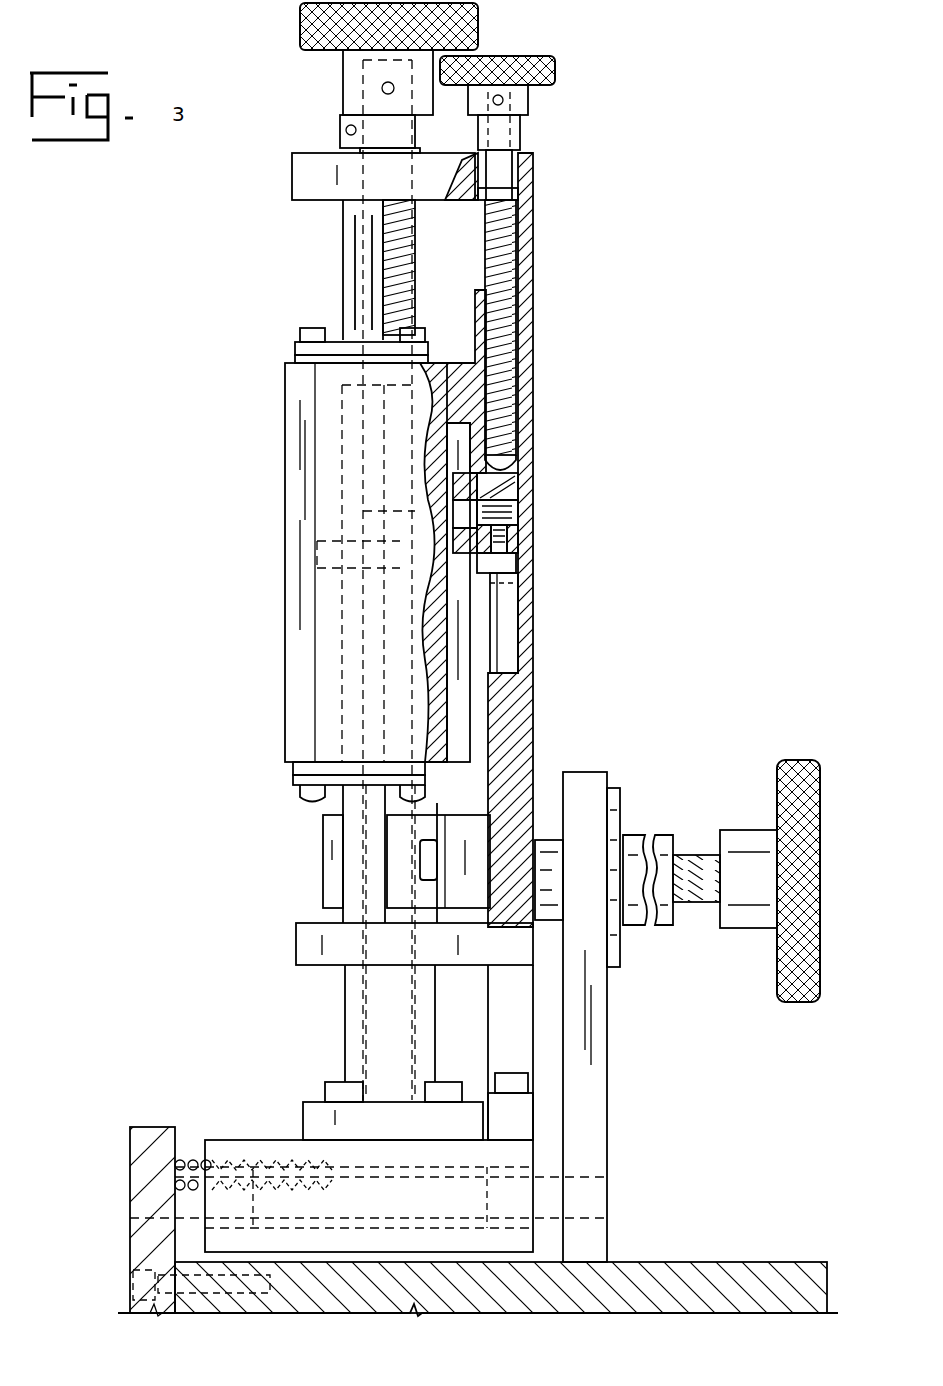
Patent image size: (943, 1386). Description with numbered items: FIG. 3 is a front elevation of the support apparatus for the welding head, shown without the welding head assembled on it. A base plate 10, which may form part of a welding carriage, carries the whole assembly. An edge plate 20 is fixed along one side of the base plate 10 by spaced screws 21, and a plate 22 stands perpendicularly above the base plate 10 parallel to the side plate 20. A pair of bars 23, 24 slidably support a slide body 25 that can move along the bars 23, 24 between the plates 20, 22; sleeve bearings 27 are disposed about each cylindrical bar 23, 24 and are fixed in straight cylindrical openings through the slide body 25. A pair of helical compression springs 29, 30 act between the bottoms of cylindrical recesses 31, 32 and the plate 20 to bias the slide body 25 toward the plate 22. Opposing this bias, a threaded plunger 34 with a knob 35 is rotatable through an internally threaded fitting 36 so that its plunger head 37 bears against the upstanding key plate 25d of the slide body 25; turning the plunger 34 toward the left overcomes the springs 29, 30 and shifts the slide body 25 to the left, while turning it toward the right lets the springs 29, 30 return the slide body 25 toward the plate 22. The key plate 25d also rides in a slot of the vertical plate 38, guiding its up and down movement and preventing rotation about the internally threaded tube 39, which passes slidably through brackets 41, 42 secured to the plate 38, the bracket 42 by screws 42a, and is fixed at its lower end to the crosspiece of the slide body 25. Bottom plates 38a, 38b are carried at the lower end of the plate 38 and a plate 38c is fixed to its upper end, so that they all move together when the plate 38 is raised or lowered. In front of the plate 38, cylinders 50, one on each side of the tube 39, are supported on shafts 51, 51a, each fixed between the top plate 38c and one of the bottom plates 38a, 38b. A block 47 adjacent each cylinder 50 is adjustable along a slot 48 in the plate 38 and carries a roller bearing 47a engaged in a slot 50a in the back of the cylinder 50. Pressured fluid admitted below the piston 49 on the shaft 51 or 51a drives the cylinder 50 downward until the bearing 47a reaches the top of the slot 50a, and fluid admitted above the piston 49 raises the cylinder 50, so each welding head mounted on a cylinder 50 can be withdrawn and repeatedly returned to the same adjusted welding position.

The base plate 10 is at (702, 1262).
The edge plate 20 is at (130, 1143).
The screws 21 is at (133, 1283).
The plate 22 is at (585, 772).
The bar 23 is at (555, 1176).
The bar 24 is at (413, 1175).
The slide body 25 is at (228, 1140).
The key plate 25d is at (535, 577).
The sleeve bearings 27 is at (235, 1235).
The helical compression spring 29 is at (178, 1185).
The helical compression spring 30 is at (149, 1193).
The cylindrical recess 31 is at (300, 1190).
The cylindrical recess 32 is at (299, 1199).
The threaded plunger 34 is at (690, 855).
The knob 35 is at (795, 760).
The fitting 36 is at (655, 835).
The plunger head 37 is at (546, 840).
The plate 38 is at (533, 396).
The bottom plate 38a is at (296, 945).
The bottom plate 38b is at (343, 947).
The plate 38c is at (292, 175).
The internally threaded tube 39 is at (345, 1015).
The bracket 41 is at (477, 362).
The bracket 42 is at (462, 815).
The screws 42a is at (420, 860).
The block 47 is at (533, 336).
The roller bearing 47a is at (510, 465).
The slot 48 is at (513, 628).
The piston 49 is at (340, 572).
The cylinder 50 is at (285, 552).
The slot 50a is at (460, 600).
The shaft 51 is at (343, 262).
The shaft 51a is at (349, 267).